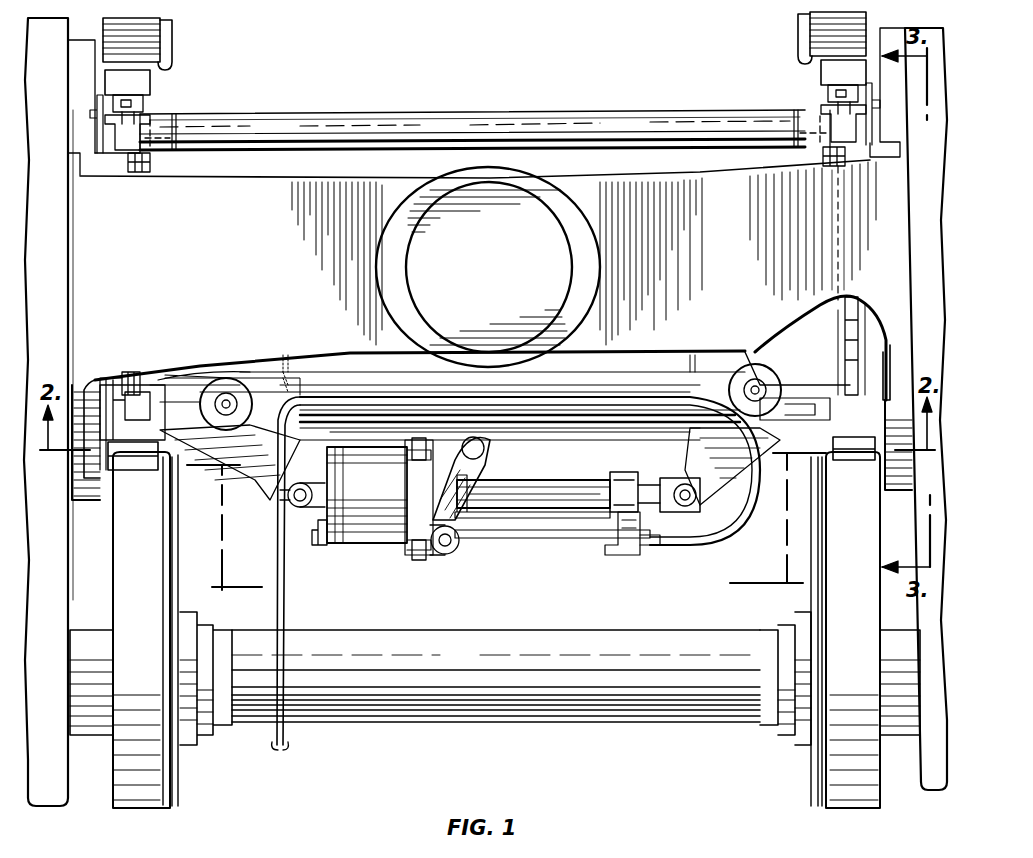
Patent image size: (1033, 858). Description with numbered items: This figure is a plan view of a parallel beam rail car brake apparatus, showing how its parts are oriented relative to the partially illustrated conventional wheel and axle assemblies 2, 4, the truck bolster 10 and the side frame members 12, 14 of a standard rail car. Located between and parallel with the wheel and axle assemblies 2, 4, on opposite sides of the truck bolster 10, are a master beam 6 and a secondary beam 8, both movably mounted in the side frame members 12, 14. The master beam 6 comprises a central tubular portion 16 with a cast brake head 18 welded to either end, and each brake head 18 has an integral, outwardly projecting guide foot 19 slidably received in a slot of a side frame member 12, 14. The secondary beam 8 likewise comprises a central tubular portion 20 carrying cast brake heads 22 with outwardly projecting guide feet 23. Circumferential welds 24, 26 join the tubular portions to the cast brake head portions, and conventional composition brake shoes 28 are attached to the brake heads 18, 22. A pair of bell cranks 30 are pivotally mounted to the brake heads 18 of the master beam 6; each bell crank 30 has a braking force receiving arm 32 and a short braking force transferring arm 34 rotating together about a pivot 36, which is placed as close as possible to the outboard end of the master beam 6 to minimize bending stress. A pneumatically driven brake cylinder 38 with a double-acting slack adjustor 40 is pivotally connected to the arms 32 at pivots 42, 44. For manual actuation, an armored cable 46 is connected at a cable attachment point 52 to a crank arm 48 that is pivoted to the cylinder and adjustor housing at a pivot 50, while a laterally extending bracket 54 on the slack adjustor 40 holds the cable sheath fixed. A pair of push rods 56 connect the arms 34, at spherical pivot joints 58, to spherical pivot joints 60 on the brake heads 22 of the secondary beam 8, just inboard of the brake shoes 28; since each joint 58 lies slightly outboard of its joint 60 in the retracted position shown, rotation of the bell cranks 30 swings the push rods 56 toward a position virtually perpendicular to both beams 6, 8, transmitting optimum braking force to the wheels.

The wheel and axle assembly 2 is at (118, 562).
The wheel and axle assembly 4 is at (162, 46).
The master beam 6 is at (350, 353).
The secondary beam 8 is at (515, 98).
The truck bolster 10 is at (232, 266).
The side frame member 12 is at (68, 228).
The side frame member 14 is at (918, 200).
The central tubular portion 16 is at (590, 428).
The brake head 18 is at (176, 388).
The guide foot 19 is at (106, 385).
The central tubular portion 20 is at (410, 118).
The brake head 22 is at (165, 116).
The guide foot 23 is at (97, 115).
The circumferential weld 24 is at (296, 348).
The circumferential weld 26 is at (178, 128).
The composition brake shoe 28 is at (140, 84).
The bell crank 30 is at (220, 378).
The braking force receiving arm 32 is at (262, 478).
The braking force transferring arm 34 is at (165, 435).
The pivot 36 is at (228, 400).
The brake cylinder 38 is at (345, 540).
The double-acting slack adjustor 40 is at (565, 480).
The pivot 42 is at (296, 507).
The pivot 44 is at (685, 506).
The armored cable 46 is at (430, 404).
The crank arm 48 is at (486, 457).
The pivot 50 is at (515, 426).
The cable attachment point 52 is at (450, 552).
The laterally extending bracket 54 is at (628, 490).
The push rod 56 is at (132, 372).
The spherical pivot joint 58 is at (865, 370).
The spherical pivot joint 60 is at (145, 173).